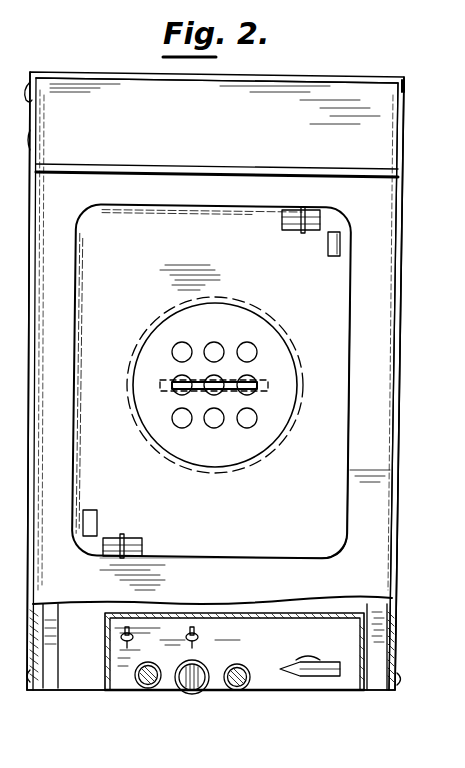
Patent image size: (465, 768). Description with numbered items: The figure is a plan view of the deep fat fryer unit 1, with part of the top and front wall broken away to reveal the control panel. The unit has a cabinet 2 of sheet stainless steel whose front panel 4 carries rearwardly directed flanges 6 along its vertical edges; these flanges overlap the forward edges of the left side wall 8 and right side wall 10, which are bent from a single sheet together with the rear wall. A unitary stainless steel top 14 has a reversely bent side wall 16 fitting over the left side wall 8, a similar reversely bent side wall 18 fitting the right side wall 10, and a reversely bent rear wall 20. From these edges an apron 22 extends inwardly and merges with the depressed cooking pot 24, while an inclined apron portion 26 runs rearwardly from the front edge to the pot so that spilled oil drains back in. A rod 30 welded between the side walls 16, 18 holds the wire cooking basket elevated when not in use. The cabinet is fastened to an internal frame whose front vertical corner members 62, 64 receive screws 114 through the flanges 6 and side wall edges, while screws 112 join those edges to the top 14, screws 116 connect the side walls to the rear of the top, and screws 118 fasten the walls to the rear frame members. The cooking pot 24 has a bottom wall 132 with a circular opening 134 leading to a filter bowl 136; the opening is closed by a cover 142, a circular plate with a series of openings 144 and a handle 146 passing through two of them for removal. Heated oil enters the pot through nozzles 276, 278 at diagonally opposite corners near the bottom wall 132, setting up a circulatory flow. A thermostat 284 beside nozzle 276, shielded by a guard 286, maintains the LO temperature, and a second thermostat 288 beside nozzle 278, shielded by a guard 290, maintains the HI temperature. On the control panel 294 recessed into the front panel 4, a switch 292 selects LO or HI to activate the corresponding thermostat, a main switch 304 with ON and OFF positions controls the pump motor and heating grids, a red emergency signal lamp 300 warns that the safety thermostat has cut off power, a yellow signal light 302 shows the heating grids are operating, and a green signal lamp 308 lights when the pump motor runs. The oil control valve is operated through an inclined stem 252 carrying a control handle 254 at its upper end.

The deep fat fryer unit 1 is at (313, 68).
The cabinet 2 is at (406, 639).
The front panel 4 is at (58, 691).
The flanges 6 is at (29, 671).
The left side wall 8 is at (34, 634).
The right side wall 10 is at (28, 362).
The top 14 is at (392, 378).
The reversely bent side wall 16 is at (32, 414).
The reversely bent side wall 18 is at (397, 272).
The reversely bent rear wall 20 is at (107, 72).
The apron 22 is at (73, 206).
The cooking pot 24 is at (152, 262).
The inclined apron portion 26 is at (172, 579).
The rod 30 is at (305, 169).
The vertical corner member 62 is at (55, 686).
The vertical corner member 64 is at (375, 692).
The screws 112 is at (2, 140).
The screws 114 is at (33, 690).
The screws 116 is at (403, 80).
The screws 118 is at (26, 92).
The bottom wall 132 is at (344, 490).
The circular opening 134 is at (132, 398).
The filter bowl 136 is at (290, 332).
The cover 142 is at (262, 447).
The openings 144 is at (246, 349).
The handle 146 is at (186, 381).
The stem 252 is at (310, 686).
The control handle 254 is at (336, 683).
The nozzle 276 is at (90, 508).
The nozzle 278 is at (330, 249).
The thermostat 284 is at (140, 546).
The guard 286 is at (122, 534).
The second thermostat 288 is at (291, 210).
The guard 290 is at (303, 230).
The switch 292 is at (110, 632).
The control panel 294 is at (258, 628).
The red emergency signal lamp 300 is at (193, 695).
The yellow signal light 302 is at (240, 691).
The main switch 304 is at (193, 628).
The green signal lamp 308 is at (147, 689).